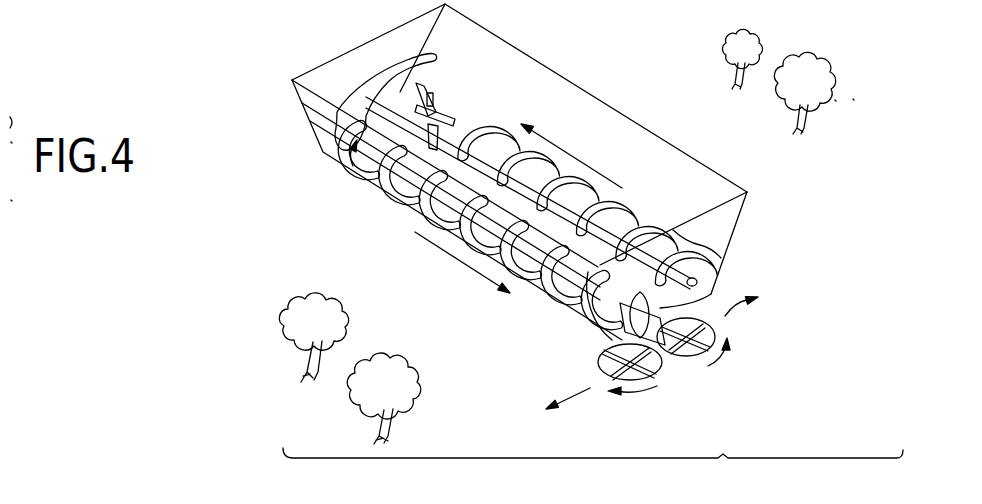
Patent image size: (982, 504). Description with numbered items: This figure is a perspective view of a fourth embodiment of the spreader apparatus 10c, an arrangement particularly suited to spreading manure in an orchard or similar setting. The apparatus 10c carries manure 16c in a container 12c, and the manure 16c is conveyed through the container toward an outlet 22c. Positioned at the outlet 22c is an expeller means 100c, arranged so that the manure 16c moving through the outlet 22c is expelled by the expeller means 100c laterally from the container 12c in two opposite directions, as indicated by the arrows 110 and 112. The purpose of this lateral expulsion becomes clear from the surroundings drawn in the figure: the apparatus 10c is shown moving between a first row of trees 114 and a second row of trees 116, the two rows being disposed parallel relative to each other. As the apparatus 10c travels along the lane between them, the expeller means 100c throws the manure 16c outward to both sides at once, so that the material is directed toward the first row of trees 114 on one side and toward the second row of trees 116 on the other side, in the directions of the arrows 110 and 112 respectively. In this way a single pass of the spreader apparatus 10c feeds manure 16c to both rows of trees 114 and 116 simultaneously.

The spreader apparatus 10c is at (606, 101).
The container 12c is at (733, 181).
The manure 16c is at (353, 95).
The outlet 22c is at (712, 293).
The expeller means 100c is at (723, 324).
The arrow 110 is at (584, 392).
The arrow 112 is at (766, 312).
The first row of trees 114 is at (400, 433).
The second row of trees 116 is at (808, 128).